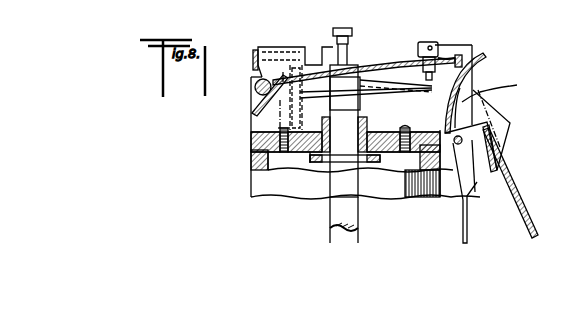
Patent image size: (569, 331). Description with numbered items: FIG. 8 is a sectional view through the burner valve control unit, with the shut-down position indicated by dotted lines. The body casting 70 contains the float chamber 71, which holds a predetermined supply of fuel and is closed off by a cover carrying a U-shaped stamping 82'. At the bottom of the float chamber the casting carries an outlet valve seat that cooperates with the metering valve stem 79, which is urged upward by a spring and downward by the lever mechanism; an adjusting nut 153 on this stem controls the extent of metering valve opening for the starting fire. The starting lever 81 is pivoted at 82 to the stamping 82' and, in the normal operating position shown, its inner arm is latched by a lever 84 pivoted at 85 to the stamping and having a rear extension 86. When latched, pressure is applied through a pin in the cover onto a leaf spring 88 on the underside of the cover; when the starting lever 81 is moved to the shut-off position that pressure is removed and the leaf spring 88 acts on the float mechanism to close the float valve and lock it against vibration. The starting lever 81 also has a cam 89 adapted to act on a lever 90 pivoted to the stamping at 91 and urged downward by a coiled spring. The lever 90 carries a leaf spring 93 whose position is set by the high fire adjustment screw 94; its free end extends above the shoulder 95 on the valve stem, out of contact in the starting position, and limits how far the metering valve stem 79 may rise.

The body casting 70 is at (250, 160).
The float chamber 71 is at (293, 163).
The metering valve stem 79 is at (341, 158).
The starting lever 81 is at (515, 205).
The pivot 82 is at (484, 126).
The U-shaped stamping 82' is at (466, 73).
The lever 84 is at (255, 50).
The pivot 85 is at (258, 63).
The rear extension 86 is at (292, 112).
The leaf spring 88 is at (378, 162).
The cam 89 is at (472, 58).
The lever 90 is at (395, 63).
The pivot 91 is at (255, 88).
The leaf spring 93 is at (384, 91).
The high fire adjustment screw 94 is at (435, 43).
The shoulder 95 is at (358, 68).
The adjusting nut 153 is at (343, 28).